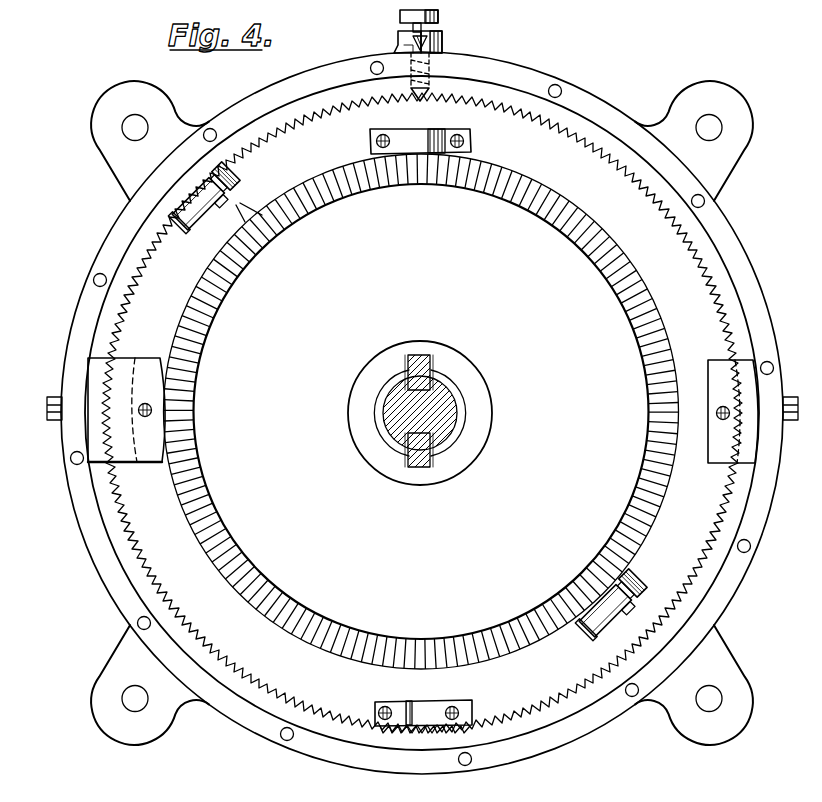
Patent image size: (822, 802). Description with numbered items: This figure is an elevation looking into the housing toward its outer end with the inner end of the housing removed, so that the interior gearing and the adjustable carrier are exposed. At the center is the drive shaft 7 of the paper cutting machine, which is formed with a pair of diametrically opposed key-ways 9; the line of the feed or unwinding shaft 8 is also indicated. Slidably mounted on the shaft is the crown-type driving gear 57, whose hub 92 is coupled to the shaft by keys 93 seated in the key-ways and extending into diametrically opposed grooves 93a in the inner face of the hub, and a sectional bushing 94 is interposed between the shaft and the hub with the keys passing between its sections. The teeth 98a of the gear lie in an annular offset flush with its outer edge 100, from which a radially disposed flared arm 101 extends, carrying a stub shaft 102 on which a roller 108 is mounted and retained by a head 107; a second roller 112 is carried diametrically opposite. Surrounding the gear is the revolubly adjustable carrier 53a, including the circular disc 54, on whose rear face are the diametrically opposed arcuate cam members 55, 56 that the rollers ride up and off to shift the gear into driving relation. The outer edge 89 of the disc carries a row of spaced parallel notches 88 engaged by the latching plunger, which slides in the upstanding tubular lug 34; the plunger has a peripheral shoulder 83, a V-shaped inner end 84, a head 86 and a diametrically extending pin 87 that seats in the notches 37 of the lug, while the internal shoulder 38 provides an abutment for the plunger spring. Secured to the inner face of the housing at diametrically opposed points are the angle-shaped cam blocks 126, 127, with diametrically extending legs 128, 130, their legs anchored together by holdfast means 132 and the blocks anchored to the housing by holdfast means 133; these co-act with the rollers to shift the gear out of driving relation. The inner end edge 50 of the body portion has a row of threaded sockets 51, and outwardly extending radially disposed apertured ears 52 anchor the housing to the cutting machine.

The drive shaft 7 is at (452, 383).
The feed or unwinding shaft 8 is at (333, 130).
The key-ways 9 is at (415, 428).
The upstanding tubular lug 34 is at (443, 47).
The notches 37 is at (398, 40).
The internal shoulder 38 is at (445, 40).
The inner end edge 50 is at (556, 750).
The threaded sockets 51 is at (632, 697).
The apertured ears 52 is at (712, 676).
The carrier 53a is at (708, 262).
The circular disc 54 is at (655, 246).
The arcuate cam member 55 is at (410, 138).
The arcuate cam member 56 is at (425, 708).
The driving gear 57 is at (600, 348).
The peripheral shoulder 83 is at (432, 72).
The V-shaped inner end 84 is at (416, 93).
The head 86 is at (400, 16).
The diametrically extending pin 87 is at (421, 35).
The notches 88 is at (565, 97).
The outer edge 89 is at (590, 122).
The hub 92 is at (474, 438).
The keys 93 is at (423, 357).
The grooves 93a is at (360, 485).
The sectional bushing 94 is at (383, 431).
The teeth 98a is at (590, 232).
The outer edge 100 is at (336, 661).
The flared arm 101 is at (247, 207).
The stub shaft 102 is at (216, 164).
The head 107 is at (182, 197).
The roller 108 is at (234, 180).
The roller 112 is at (627, 590).
The cam block 126 is at (96, 372).
The cam block 127 is at (752, 365).
The leg 128 is at (100, 448).
The leg 130 is at (745, 450).
The holdfast means 132 is at (151, 410).
The holdfast means 133 is at (52, 421).